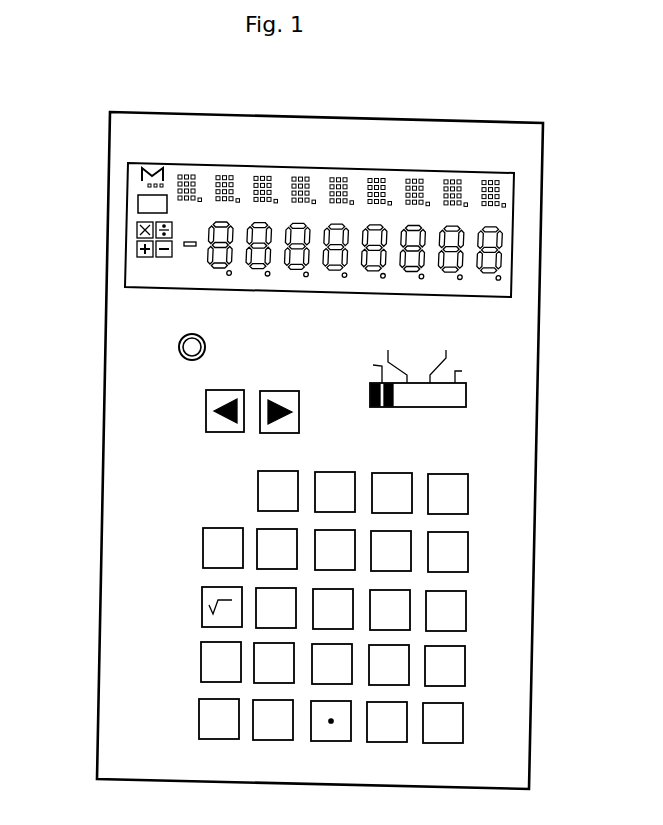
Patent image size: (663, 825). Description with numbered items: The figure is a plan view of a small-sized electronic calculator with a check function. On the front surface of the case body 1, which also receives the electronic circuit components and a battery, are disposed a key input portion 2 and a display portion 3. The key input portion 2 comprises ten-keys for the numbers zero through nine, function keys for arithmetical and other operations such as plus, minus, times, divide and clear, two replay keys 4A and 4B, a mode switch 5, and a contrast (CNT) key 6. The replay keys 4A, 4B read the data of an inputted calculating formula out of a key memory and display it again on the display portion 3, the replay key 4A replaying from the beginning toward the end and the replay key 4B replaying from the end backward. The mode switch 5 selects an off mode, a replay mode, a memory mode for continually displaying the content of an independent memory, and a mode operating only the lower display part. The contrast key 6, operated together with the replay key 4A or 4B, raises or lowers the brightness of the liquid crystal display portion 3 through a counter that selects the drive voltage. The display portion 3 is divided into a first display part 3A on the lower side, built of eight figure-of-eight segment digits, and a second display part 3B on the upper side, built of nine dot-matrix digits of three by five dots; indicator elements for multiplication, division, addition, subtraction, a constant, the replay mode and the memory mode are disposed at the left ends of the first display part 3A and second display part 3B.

The case body 1 is at (133, 486).
The key input portion 2 is at (513, 619).
The display portion 3 is at (371, 182).
The first display part 3A is at (507, 263).
The second display part 3B is at (507, 208).
The replay key 4A is at (296, 403).
The replay key 4B is at (215, 403).
The mode switch 5 is at (455, 398).
The contrast key 6 is at (179, 343).